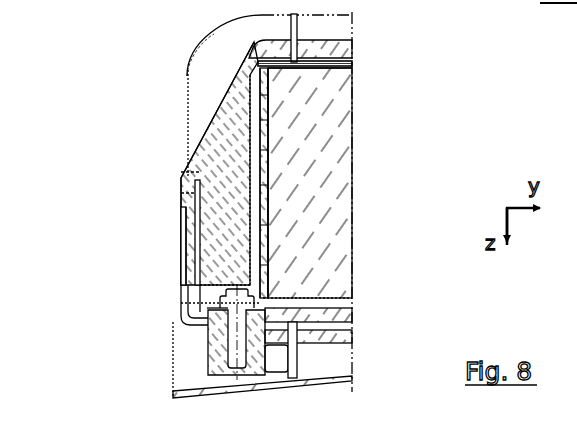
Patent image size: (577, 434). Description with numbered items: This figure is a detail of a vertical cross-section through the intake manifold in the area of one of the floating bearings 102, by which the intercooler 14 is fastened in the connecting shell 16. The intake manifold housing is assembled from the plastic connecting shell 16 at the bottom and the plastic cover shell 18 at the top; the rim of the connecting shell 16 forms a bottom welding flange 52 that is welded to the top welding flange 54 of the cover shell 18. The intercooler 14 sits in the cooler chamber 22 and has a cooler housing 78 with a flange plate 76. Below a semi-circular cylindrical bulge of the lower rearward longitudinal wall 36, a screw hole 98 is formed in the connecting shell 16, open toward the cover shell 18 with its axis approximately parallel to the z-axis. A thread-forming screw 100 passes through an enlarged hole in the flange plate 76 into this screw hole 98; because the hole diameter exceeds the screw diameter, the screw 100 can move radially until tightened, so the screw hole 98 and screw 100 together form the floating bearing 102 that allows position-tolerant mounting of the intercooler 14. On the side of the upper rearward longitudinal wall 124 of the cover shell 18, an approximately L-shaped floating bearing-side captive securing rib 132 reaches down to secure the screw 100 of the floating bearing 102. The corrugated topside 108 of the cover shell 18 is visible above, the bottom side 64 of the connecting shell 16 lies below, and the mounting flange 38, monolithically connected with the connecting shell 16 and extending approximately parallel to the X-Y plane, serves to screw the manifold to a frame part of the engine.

The intercooler 14 is at (339, 135).
The connecting shell 16 is at (184, 268).
The cover shell 18 is at (201, 83).
The cooler chamber 22 is at (251, 128).
The lower rearward longitudinal wall 36 is at (184, 250).
The mounting flange 38 is at (183, 367).
The bottom welding flange 52 is at (184, 200).
The top welding flange 54 is at (196, 172).
The bottom side 64 is at (300, 346).
The flange plate 76 is at (343, 314).
The cooler housing 78 is at (342, 67).
The screw hole 98 is at (232, 344).
The thread-forming screw 100 is at (236, 333).
The floating bearing 102 is at (250, 333).
The topside 108 is at (348, 29).
The upper rearward longitudinal wall 124 is at (193, 135).
The floating bearing-side captive securing rib 132 is at (238, 256).